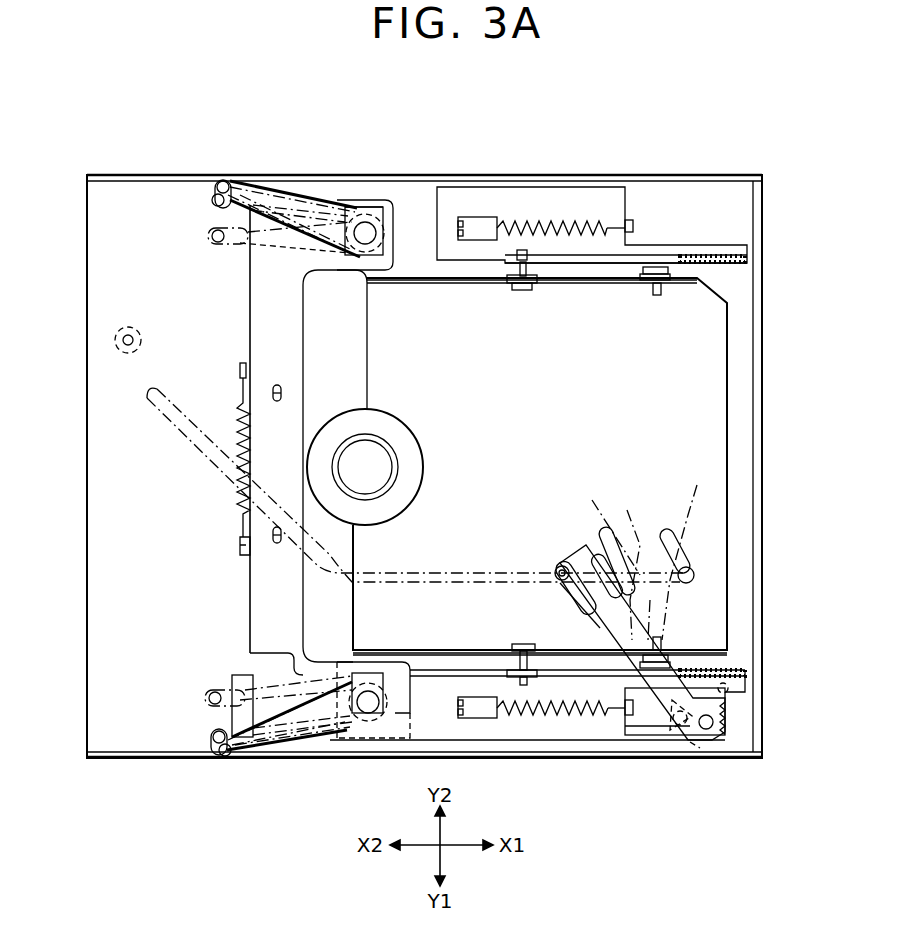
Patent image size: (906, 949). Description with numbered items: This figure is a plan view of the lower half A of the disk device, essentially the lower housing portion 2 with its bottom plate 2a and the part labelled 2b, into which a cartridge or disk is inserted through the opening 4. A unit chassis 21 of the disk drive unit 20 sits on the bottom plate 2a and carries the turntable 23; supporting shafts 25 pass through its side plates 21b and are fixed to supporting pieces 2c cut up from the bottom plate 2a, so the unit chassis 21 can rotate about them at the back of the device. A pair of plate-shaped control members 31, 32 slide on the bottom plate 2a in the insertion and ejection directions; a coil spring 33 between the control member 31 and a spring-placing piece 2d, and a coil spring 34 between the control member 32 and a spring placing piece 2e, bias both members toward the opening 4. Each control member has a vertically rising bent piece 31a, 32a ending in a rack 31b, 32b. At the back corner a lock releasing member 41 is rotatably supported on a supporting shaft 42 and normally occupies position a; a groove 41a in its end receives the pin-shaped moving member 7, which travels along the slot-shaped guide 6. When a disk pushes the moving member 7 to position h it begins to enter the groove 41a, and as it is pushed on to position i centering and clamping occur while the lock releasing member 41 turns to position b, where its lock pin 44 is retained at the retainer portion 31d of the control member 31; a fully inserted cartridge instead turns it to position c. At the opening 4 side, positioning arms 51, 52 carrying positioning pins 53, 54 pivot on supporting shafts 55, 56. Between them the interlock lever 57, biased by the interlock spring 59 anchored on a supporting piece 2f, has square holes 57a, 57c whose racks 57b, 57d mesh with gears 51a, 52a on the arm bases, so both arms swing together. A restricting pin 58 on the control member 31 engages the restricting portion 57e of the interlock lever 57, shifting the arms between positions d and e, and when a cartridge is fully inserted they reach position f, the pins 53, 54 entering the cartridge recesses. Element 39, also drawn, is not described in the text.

The lower housing portion 2 is at (766, 340).
The bottom plate 2a is at (113, 345).
The chassis side wall 2b is at (118, 176).
The supporting pieces 2c is at (672, 272).
The spring-placing piece 2d is at (462, 710).
The spring placing piece 2e is at (465, 217).
The supporting piece 2f is at (238, 371).
The opening 4 is at (86, 533).
The guide 6 is at (205, 470).
The moving member 7 is at (556, 570).
The disk drive unit 20 is at (730, 410).
The unit chassis 21 is at (705, 432).
The side plates 21b is at (471, 284).
The turntable 23 is at (410, 450).
The supporting shafts 25 is at (658, 295).
The control member 31 is at (600, 722).
The bent piece 31a is at (562, 670).
The rack 31b is at (740, 677).
The engagement portion 31d is at (698, 742).
The control member 32 is at (597, 192).
The bent piece 32a is at (605, 264).
The rack 32b is at (725, 257).
The coil spring 33 is at (627, 716).
The coil spring 34 is at (549, 224).
The guide screw 39 is at (525, 277).
The lock releasing member 41 is at (718, 712).
The groove 41a is at (583, 582).
The supporting shaft 42 is at (712, 727).
The lock pin 44 is at (678, 732).
The positioning arm 51 is at (263, 746).
The gear 51a is at (378, 662).
The positioning arm 52 is at (257, 182).
The gear 52a is at (362, 207).
The positioning pin 53 is at (222, 750).
The positioning pin 54 is at (226, 180).
The supporting shaft 55 is at (382, 668).
The supporting shaft 56 is at (372, 227).
The interlock lever 57 is at (258, 320).
The square hole 57a is at (338, 742).
The rack 57b is at (362, 740).
The square hole 57c is at (347, 268).
The rack 57d is at (391, 270).
The restricting portion 57e is at (233, 667).
The restricting pin 58 is at (258, 662).
The interlock spring 59 is at (238, 412).
The lower half A is at (652, 172).
The position a is at (560, 585).
The position b is at (611, 534).
The position c is at (677, 548).
The position d is at (290, 192).
The position e is at (222, 245).
The position f is at (212, 201).
The position h is at (556, 577).
The position i is at (614, 561).